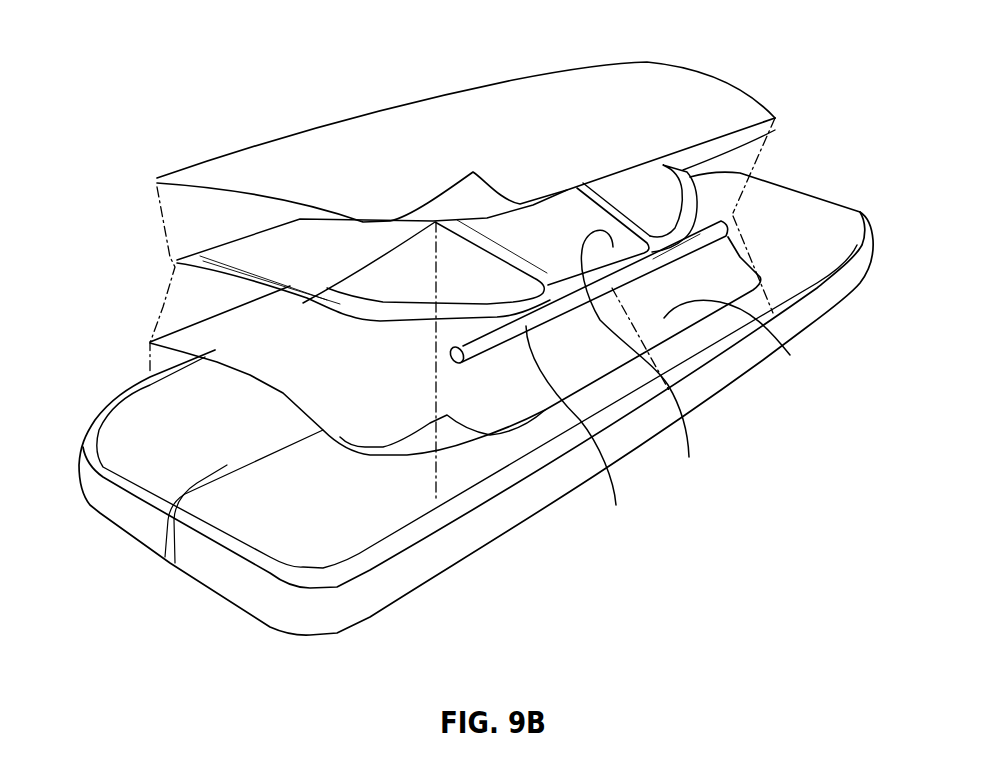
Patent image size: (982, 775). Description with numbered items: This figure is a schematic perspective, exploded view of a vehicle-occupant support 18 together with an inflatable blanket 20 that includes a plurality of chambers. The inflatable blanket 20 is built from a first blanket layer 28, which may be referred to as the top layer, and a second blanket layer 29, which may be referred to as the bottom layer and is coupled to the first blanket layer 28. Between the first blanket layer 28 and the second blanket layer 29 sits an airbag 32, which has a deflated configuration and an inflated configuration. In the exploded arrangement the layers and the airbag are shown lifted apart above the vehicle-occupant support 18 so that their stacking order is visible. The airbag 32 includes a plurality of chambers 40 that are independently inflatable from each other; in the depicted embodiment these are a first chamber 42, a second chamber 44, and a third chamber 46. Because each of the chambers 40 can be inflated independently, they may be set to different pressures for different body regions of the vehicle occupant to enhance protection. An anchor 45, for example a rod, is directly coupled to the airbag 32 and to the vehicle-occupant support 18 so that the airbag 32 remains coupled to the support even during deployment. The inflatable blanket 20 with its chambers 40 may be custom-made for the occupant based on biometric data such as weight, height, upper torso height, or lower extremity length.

The vehicle-occupant support 18 is at (117, 512).
The inflatable blanket 20 is at (416, 55).
The first blanket layer 28 is at (213, 170).
The second blanket layer 29 is at (790, 355).
The airbag 32 is at (775, 130).
The chambers 40 is at (257, 245).
The first chamber 42 is at (643, 180).
The second chamber 44 is at (588, 356).
The anchor 45 is at (579, 432).
The third chamber 46 is at (435, 287).